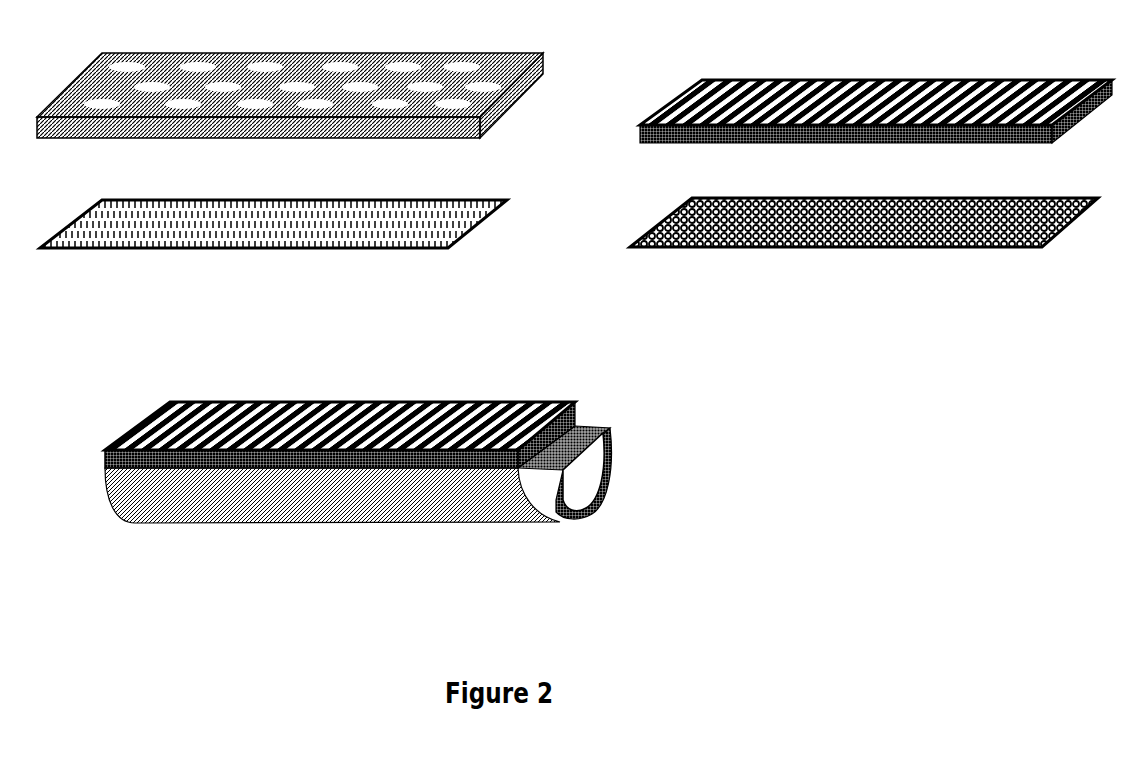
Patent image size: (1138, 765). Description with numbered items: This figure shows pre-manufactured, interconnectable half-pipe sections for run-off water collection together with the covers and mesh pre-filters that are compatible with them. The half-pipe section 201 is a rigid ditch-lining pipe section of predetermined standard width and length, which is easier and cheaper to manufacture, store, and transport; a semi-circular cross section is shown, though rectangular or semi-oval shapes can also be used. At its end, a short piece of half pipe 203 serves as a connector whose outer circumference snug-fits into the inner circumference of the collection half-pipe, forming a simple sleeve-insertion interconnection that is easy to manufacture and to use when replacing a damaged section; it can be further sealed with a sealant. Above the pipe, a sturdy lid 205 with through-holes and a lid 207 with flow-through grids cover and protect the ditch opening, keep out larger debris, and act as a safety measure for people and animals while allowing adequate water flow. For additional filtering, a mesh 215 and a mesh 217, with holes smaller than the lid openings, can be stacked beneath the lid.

The lid 205 is at (290, 76).
The lid 207 is at (876, 78).
The mesh 215 is at (273, 254).
The mesh filter 217 is at (864, 253).
The half-pipe section 201 is at (283, 524).
The half pipe connector 203 is at (569, 524).